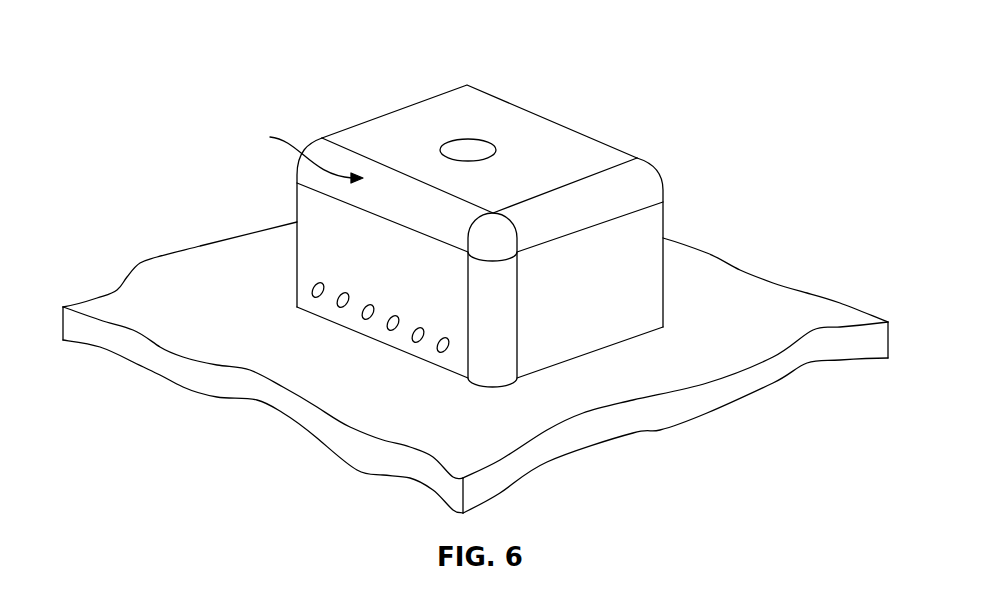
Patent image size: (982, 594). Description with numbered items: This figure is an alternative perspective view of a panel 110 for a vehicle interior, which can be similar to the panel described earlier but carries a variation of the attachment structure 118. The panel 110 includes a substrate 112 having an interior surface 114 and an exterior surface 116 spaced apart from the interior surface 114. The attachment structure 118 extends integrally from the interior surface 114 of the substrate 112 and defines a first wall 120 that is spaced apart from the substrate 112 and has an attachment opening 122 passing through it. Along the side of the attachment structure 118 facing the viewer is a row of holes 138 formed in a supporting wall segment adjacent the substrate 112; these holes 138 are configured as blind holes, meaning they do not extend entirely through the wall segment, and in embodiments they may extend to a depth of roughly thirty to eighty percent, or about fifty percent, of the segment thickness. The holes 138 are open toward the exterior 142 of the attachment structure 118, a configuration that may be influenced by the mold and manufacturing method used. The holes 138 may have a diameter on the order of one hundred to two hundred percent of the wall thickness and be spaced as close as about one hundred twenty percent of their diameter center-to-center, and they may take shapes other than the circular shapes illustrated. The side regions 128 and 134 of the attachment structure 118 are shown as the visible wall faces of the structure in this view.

The panel 110 is at (767, 243).
The substrate 112 is at (802, 360).
The interior surface 114 is at (818, 305).
The exterior surface 116 is at (697, 439).
The attachment structure 118 is at (673, 182).
The first wall 120 is at (603, 165).
The attachment opening 122 is at (468, 155).
The right side wall 128 is at (643, 255).
The left side wall 134 is at (337, 232).
The holes 138 is at (312, 292).
The exterior 142 is at (295, 154).